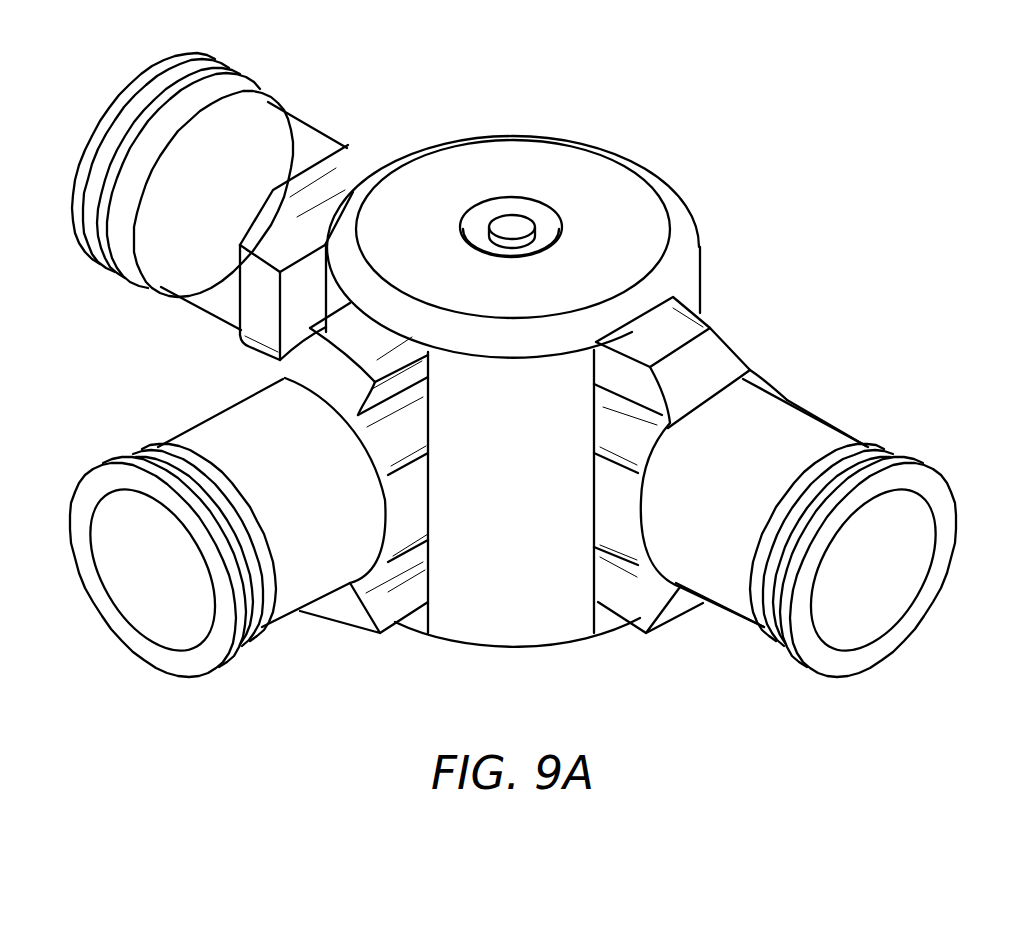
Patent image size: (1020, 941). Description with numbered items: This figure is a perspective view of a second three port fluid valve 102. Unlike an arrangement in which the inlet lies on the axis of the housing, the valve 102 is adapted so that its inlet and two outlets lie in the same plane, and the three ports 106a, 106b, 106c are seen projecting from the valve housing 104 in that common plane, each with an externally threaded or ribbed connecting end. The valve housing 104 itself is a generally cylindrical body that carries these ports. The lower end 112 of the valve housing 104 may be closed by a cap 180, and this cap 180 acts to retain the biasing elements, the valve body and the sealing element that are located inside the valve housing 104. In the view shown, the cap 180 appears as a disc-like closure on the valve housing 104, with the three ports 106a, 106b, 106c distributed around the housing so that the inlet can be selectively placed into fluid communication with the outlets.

The valve 102 is at (797, 192).
The valve housing 104 is at (488, 522).
The first port 106a is at (292, 598).
The second port 106b is at (183, 282).
The third port 106c is at (721, 597).
The lower end 112 is at (565, 627).
The cap 180 is at (524, 652).